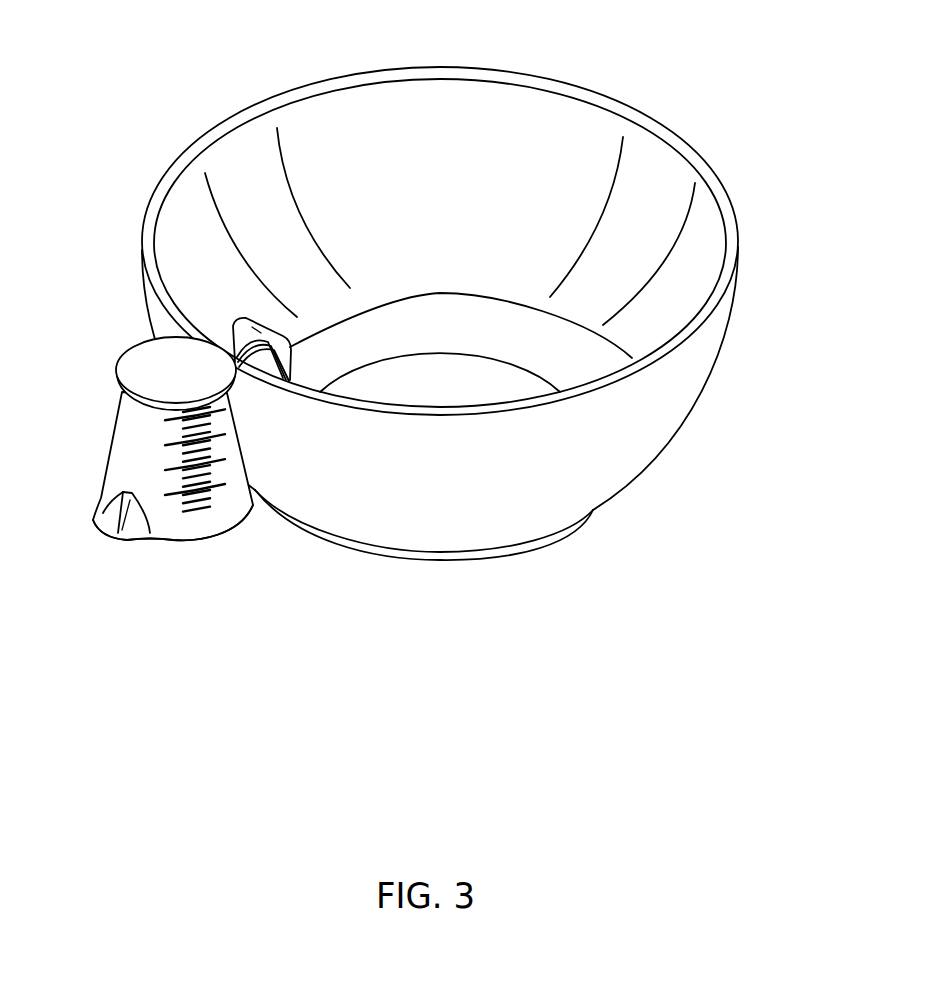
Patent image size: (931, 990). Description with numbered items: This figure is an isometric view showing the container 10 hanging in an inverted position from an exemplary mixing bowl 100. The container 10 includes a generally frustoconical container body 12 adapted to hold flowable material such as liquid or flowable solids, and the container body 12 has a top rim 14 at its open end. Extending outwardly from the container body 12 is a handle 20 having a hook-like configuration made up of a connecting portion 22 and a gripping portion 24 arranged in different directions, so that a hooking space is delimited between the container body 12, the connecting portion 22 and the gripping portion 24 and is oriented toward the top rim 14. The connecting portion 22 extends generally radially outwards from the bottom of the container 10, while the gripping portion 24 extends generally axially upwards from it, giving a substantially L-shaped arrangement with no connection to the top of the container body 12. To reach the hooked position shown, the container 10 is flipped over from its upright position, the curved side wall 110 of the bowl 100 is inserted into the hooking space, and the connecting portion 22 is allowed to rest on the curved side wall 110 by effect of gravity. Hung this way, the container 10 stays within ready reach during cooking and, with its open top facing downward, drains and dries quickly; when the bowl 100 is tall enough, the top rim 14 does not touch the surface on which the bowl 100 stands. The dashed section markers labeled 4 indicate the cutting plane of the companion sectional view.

The mixing bowl 100 is at (440, 327).
The curved side wall 110 is at (340, 507).
The container 10 is at (141, 489).
The container body 12 is at (118, 463).
The top rim 14 is at (202, 542).
The handle 20 is at (249, 435).
The connecting portion 22 is at (232, 338).
The gripping portion 24 is at (287, 353).
The section line of FIG. 4 is at (690, 143).